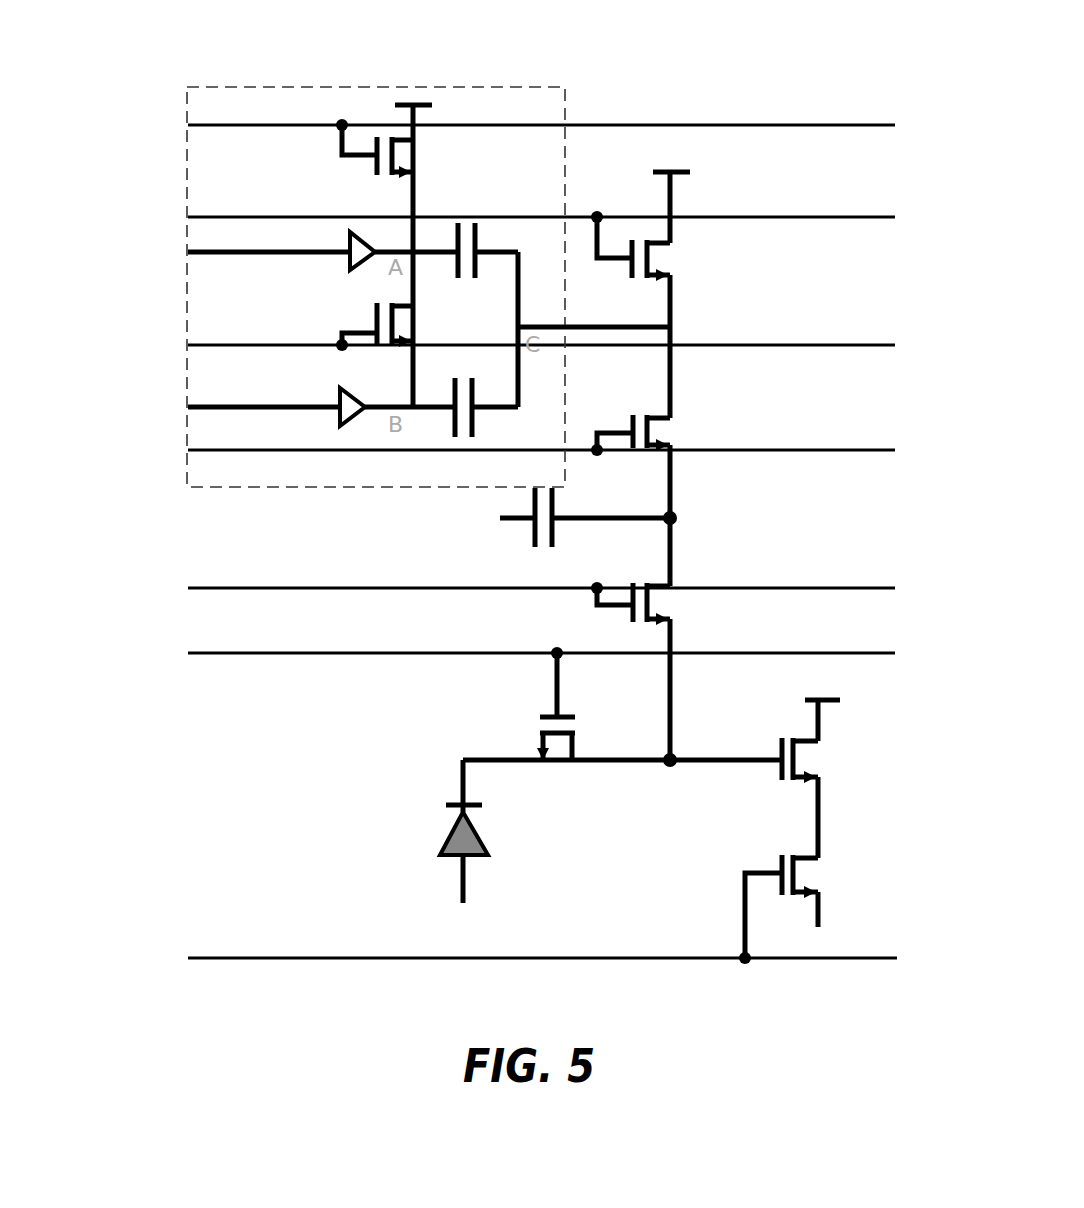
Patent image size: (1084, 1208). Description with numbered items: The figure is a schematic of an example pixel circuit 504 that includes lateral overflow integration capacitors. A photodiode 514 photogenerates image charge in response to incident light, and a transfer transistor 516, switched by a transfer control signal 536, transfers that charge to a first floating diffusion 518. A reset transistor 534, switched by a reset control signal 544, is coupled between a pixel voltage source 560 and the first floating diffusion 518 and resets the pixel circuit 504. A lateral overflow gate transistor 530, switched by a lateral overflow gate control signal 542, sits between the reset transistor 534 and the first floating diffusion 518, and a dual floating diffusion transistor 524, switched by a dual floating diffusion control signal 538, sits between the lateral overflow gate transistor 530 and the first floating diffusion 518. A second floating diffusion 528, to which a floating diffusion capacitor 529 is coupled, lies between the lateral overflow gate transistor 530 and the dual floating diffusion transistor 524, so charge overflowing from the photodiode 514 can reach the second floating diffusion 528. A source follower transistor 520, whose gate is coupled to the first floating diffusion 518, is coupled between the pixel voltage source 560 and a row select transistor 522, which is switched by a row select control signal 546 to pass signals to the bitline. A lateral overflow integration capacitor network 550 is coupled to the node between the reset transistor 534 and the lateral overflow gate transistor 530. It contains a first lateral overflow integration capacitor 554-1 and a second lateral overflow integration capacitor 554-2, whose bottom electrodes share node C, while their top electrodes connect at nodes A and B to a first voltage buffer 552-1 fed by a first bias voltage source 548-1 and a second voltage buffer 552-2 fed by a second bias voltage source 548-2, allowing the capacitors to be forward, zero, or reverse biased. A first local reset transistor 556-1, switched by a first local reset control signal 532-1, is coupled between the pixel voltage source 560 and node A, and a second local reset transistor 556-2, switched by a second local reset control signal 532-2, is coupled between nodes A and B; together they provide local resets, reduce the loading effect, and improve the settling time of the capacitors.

The pixel circuit 504 is at (262, 49).
The photodiode 514 is at (431, 837).
The transfer transistor TX 516 is at (478, 682).
The first floating diffusion FD1 518 is at (670, 826).
The source follower transistor SF 520 is at (896, 752).
The row select transistor RS 522 is at (892, 880).
The dual floating diffusion transistor DFD 524 is at (766, 604).
The second floating diffusion FD2 528 is at (771, 520).
The floating diffusion capacitor FDC 529 is at (484, 574).
The lateral overflow gate transistor LFG 530 is at (766, 428).
The reset transistor RST 534 is at (766, 262).
The first local reset control signal T1 532-1 is at (142, 127).
The second local reset control signal T2 532-2 is at (142, 347).
The transfer control signal TX 536 is at (132, 656).
The dual floating diffusion control signal DFD 538 is at (128, 589).
The lateral overflow gate control signal LFG 542 is at (128, 451).
The reset control signal RST 544 is at (128, 219).
The row select control signal RS 546 is at (136, 960).
The first bias voltage source Vcap-1 548-1 is at (124, 253).
The second bias voltage source Vcap-2 548-2 is at (124, 408).
The lateral overflow integration capacitor (LOFIC) network 550 is at (360, 489).
The first voltage buffer 552-1 is at (344, 258).
The second voltage buffer 552-2 is at (340, 398).
The first LOFIC CAP1 554-1 is at (426, 199).
The second LOFIC CAP2 554-2 is at (426, 468).
The first local reset transistor T1 556-1 is at (479, 159).
The second local reset transistor T2 556-2 is at (477, 346).
The pixel voltage source Pixel VDD 560 is at (667, 125).